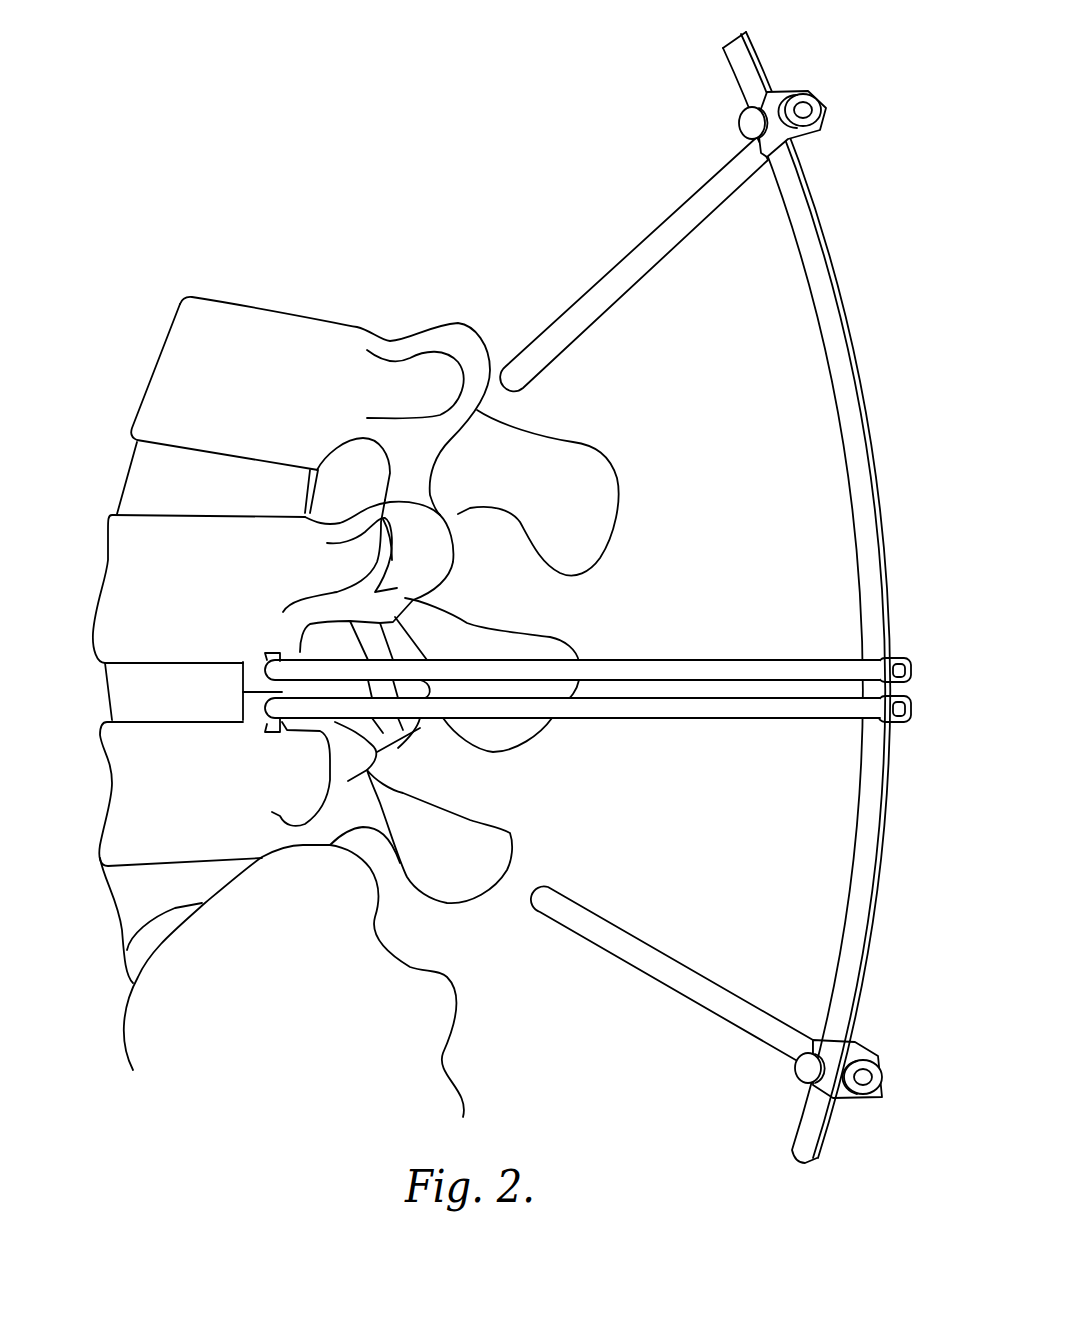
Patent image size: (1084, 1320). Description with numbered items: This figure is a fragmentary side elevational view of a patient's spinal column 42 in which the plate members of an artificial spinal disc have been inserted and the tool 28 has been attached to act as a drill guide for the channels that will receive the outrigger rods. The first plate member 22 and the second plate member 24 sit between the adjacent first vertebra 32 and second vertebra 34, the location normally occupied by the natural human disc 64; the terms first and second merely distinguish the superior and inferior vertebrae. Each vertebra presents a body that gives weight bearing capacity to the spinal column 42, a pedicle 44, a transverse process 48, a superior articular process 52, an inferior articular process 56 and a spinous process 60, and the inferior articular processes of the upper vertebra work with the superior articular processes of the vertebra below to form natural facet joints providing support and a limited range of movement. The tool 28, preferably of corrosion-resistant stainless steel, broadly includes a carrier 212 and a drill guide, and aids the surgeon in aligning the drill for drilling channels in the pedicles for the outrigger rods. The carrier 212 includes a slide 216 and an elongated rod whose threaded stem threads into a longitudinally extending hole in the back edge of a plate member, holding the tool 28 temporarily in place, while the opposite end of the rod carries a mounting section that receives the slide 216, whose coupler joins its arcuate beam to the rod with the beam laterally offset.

The first plate member 22 is at (252, 677).
The second plate member 24 is at (248, 722).
The tool 28 is at (845, 242).
The first vertebra 32 is at (105, 575).
The second vertebra 34 is at (115, 793).
The spinal column 42 is at (134, 391).
The left pedicle 44 is at (330, 530).
The left transverse process 48 is at (447, 583).
The left superior articular process 52 is at (455, 330).
The left inferior articular process 56 is at (430, 512).
The spinous process 60 is at (597, 460).
The natural human disc 64 is at (135, 478).
The carrier 212 is at (768, 660).
The slide 216 is at (655, 660).